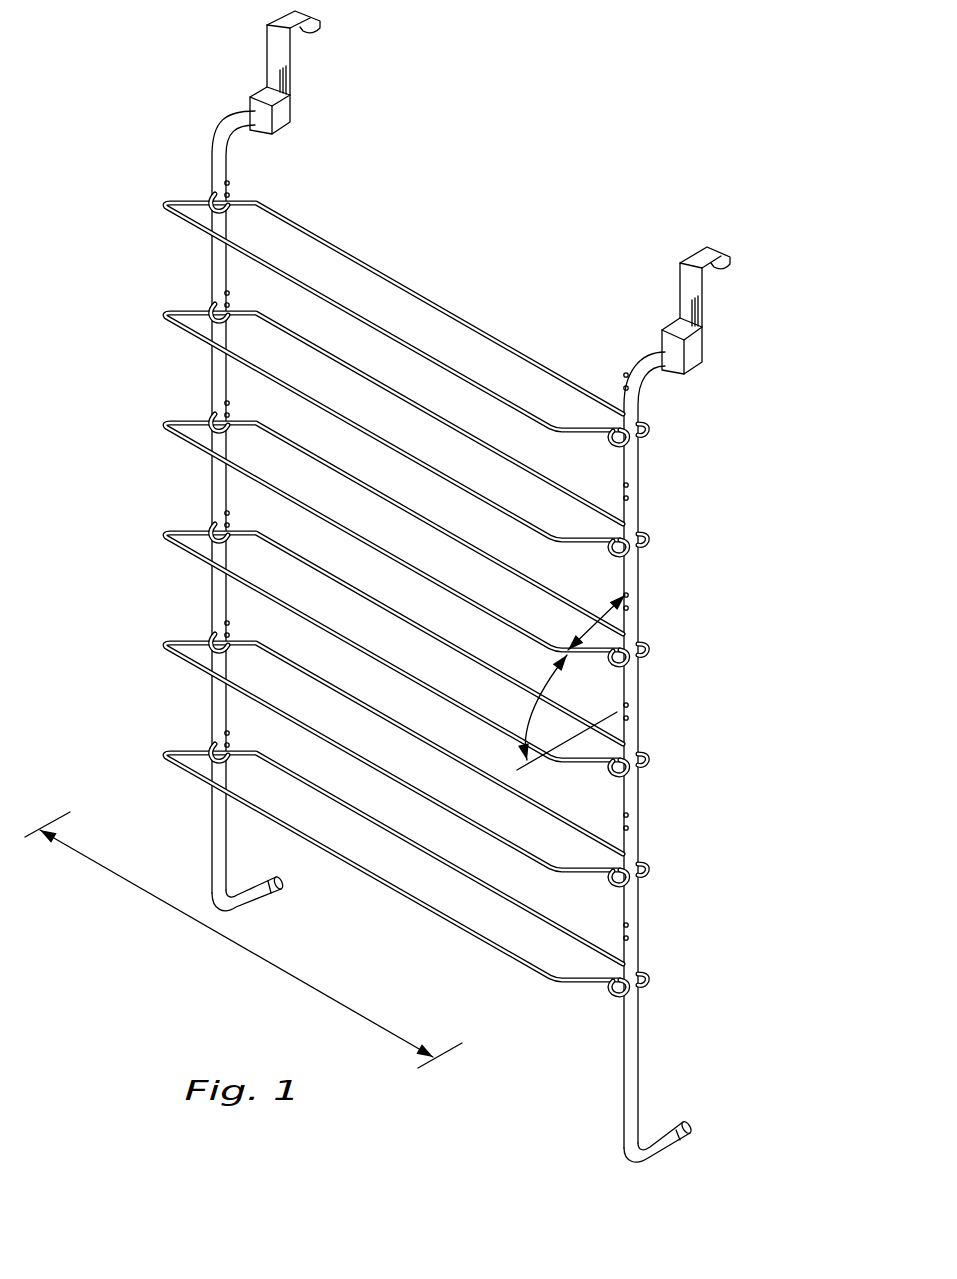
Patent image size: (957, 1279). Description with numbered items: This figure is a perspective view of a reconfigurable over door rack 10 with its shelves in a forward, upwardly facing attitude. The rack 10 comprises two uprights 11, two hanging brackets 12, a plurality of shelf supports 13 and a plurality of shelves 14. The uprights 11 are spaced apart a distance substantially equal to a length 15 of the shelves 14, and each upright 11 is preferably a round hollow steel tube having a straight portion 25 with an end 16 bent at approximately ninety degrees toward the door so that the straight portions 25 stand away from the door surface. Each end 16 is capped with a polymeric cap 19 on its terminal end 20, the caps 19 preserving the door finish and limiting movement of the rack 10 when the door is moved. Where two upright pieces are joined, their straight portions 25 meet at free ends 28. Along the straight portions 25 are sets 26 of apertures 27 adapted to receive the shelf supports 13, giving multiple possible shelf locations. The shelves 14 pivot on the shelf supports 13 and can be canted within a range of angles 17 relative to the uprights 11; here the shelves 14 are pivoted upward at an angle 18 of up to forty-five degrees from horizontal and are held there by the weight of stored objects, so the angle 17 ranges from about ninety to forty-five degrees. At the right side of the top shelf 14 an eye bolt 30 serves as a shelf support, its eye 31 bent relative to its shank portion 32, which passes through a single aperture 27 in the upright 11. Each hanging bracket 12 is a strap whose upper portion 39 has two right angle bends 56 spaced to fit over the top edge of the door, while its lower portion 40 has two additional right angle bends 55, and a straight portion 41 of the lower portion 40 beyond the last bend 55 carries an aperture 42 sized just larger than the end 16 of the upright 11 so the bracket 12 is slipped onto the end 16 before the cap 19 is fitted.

The reconfigurable over door rack 10 is at (698, 133).
The upright 11 is at (215, 283).
The hanging bracket 12 is at (290, 78).
The shelf support 13 is at (645, 575).
The shelf 14 is at (448, 312).
The length 15 is at (228, 940).
The end 16 is at (690, 395).
The angle 17 is at (603, 610).
The angle 18 is at (535, 720).
The cap 19 is at (700, 348).
The terminal end 20 is at (745, 1135).
The straight portion 25 is at (645, 915).
The set of apertures 26 is at (155, 385).
The aperture 27 is at (212, 470).
The free end 28 is at (640, 725).
The eye bolt 30 is at (700, 452).
The eye 31 is at (612, 444).
The shank portion 32 is at (648, 420).
The upper portion 39 is at (362, 40).
The lower portion 40 is at (225, 70).
The straight portion 41 is at (248, 112).
The aperture 42 is at (266, 126).
The right angle bend 55 is at (665, 325).
The right angle bend 56 is at (722, 278).